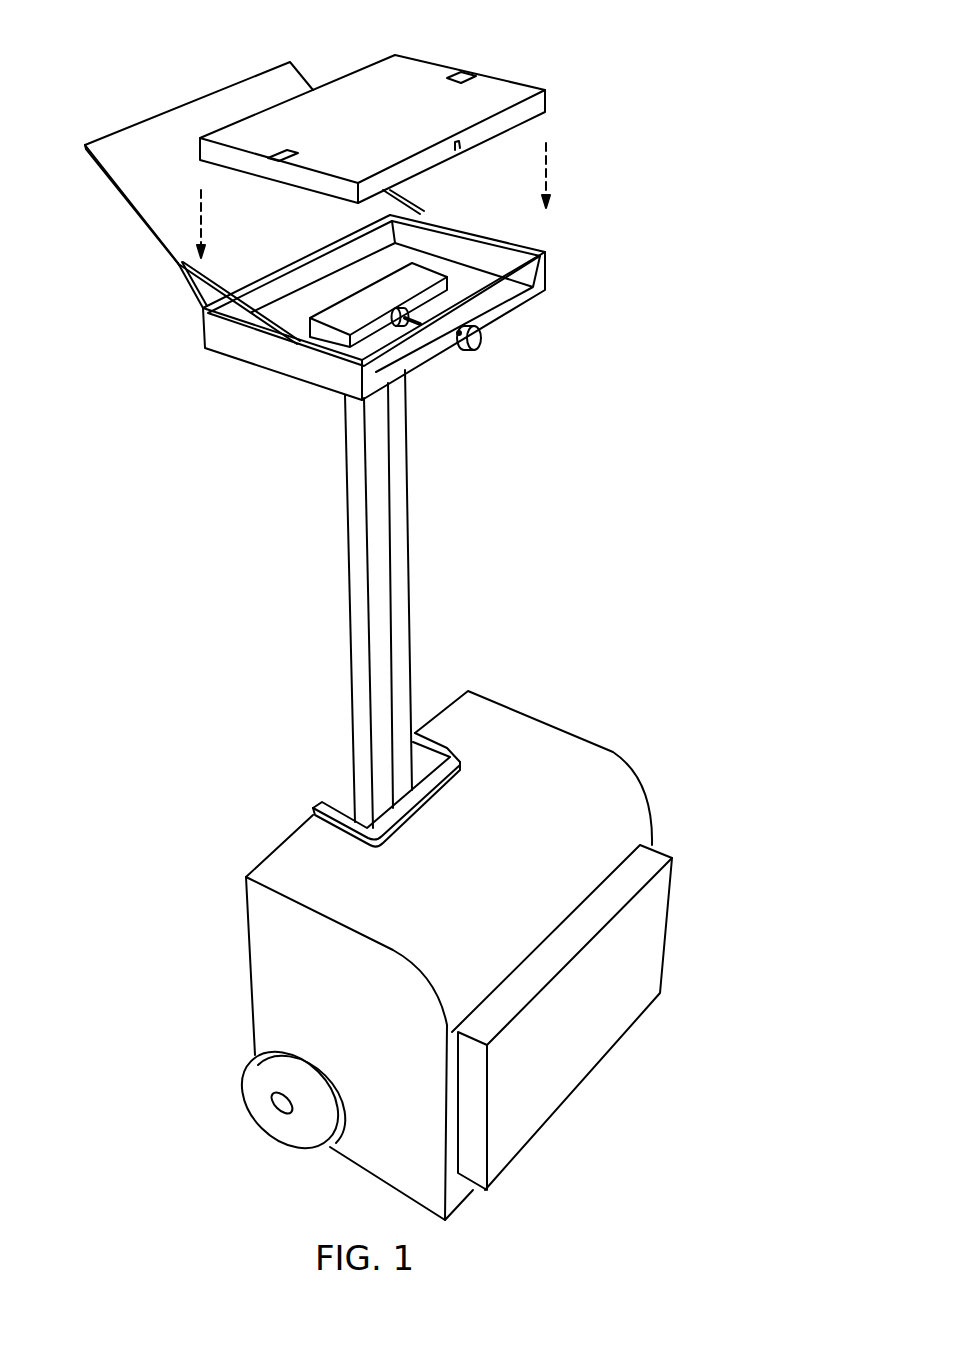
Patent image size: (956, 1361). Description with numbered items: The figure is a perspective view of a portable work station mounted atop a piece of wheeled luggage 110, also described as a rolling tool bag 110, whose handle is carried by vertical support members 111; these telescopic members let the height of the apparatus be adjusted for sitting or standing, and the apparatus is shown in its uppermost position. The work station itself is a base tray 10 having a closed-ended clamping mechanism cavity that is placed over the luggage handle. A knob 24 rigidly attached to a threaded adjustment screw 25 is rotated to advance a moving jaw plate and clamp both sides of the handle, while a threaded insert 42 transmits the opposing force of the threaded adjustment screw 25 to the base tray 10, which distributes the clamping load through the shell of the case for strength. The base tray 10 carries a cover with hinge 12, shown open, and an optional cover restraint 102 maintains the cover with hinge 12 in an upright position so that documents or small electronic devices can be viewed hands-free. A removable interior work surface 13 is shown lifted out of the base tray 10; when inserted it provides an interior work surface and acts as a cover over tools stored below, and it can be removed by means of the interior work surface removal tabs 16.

The base tray 10 is at (535, 276).
The cover with hinge 12 is at (123, 140).
The removable interior work surface 13 is at (511, 90).
The interior work surface removal tabs 16 is at (280, 147).
The knob 24 is at (482, 340).
The threaded adjustment screw 25 is at (415, 325).
The threaded insert 42 is at (345, 340).
The cover restraint 102 is at (183, 287).
The wheeled luggage 110 is at (292, 858).
The vertical support members 111 is at (410, 540).